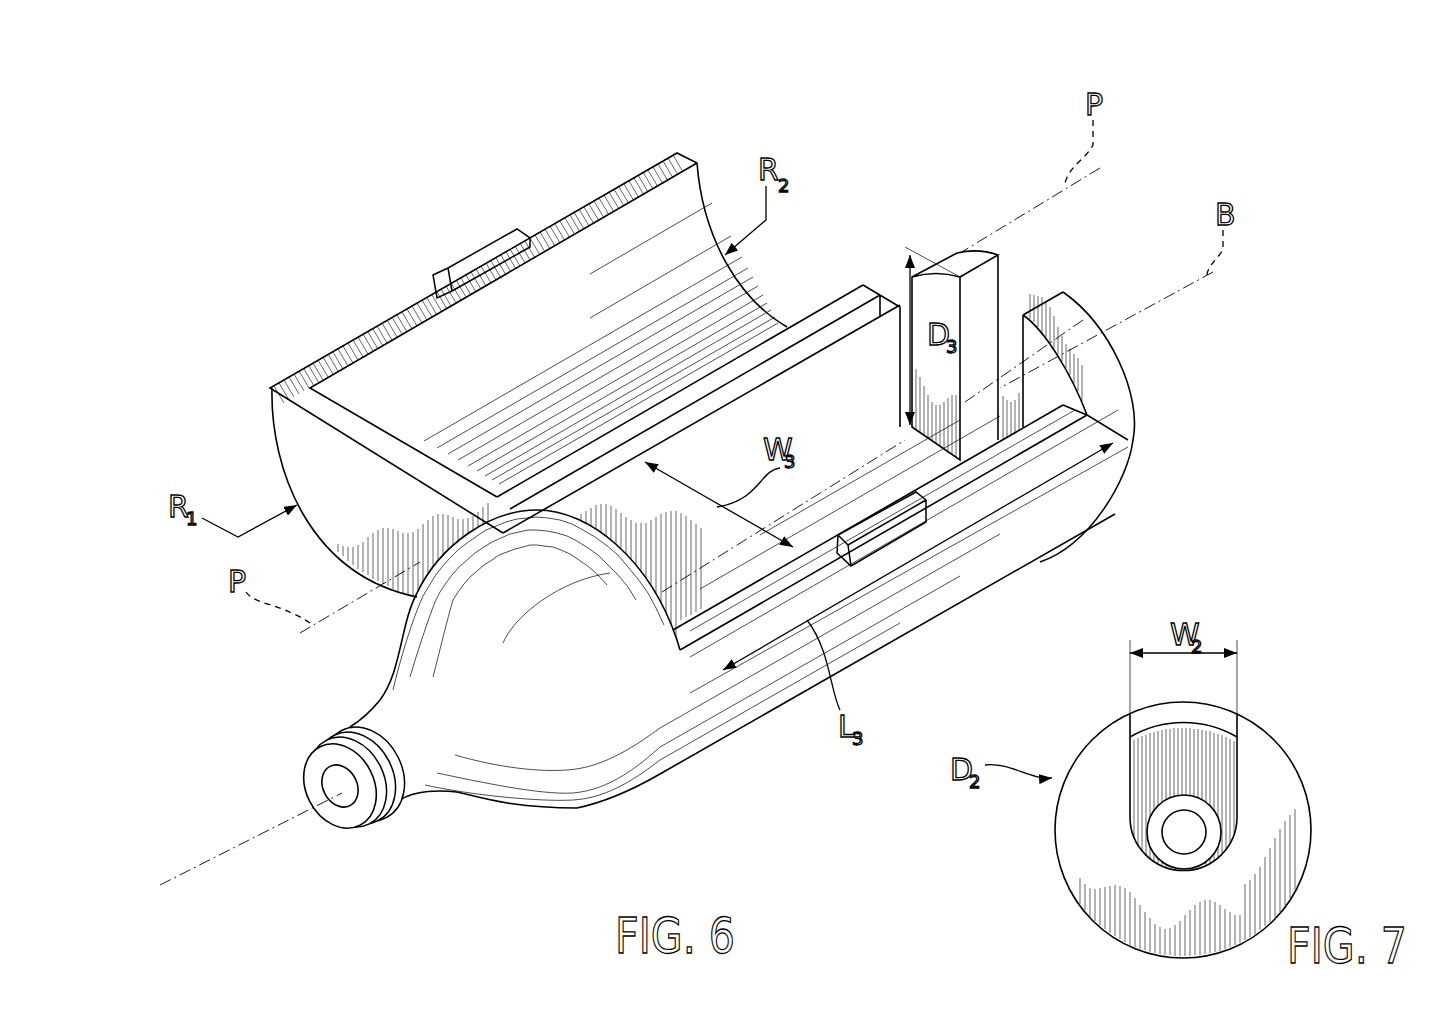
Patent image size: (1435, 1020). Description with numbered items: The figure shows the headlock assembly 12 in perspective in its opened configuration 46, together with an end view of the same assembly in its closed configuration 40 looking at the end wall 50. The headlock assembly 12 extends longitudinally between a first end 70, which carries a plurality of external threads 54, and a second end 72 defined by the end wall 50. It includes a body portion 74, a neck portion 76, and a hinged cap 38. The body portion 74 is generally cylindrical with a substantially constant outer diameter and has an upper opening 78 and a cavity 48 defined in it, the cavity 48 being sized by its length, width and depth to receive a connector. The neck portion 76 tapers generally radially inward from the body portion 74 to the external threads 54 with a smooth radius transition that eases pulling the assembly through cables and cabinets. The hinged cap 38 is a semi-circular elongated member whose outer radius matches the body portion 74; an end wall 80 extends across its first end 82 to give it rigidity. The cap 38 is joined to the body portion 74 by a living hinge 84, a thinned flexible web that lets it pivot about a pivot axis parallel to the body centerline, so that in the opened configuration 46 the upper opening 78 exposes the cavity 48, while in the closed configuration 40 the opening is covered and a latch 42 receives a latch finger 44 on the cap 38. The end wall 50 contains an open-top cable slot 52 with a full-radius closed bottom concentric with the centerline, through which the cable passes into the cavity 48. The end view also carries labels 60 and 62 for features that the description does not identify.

In FIG. 6, the headlock assembly 12 is at (704, 430).
In FIG. 7, the headlock assembly 12 is at (1138, 785).
In FIG. 6, the hinged cap 38 is at (602, 195).
In FIG. 7, the hinged cap 38 is at (1217, 702).
In FIG. 7, the closed configuration 40 is at (1030, 808).
In FIG. 6, the latch 42 is at (887, 543).
In FIG. 6, the latch finger 44 is at (467, 258).
In FIG. 6, the opened configuration 46 is at (315, 660).
In FIG. 6, the cavity 48 is at (800, 403).
In FIG. 6, the end wall 50 is at (973, 250).
In FIG. 7, the end wall 50 is at (1080, 863).
In FIG. 6, the cable slot 52 is at (1023, 297).
In FIG. 7, the cable slot 52 is at (1157, 770).
In FIG. 6, the plurality of external threads 54 is at (397, 810).
In FIG. 7, the opening 60 is at (1223, 830).
In FIG. 6, the bottle mouth 62 is at (340, 802).
In FIG. 7, the bottle mouth 62 is at (1203, 823).
In FIG. 6, the first end 70 is at (562, 742).
In FIG. 6, the second end 72 is at (1157, 462).
In FIG. 6, the body portion 74 is at (1008, 542).
In FIG. 6, the neck portion 76 is at (573, 770).
In FIG. 6, the upper opening 78 is at (1100, 375).
In FIG. 6, the end wall 80 is at (358, 410).
In FIG. 6, the first end 82 is at (235, 457).
In FIG. 6, the living hinge 84 is at (863, 300).